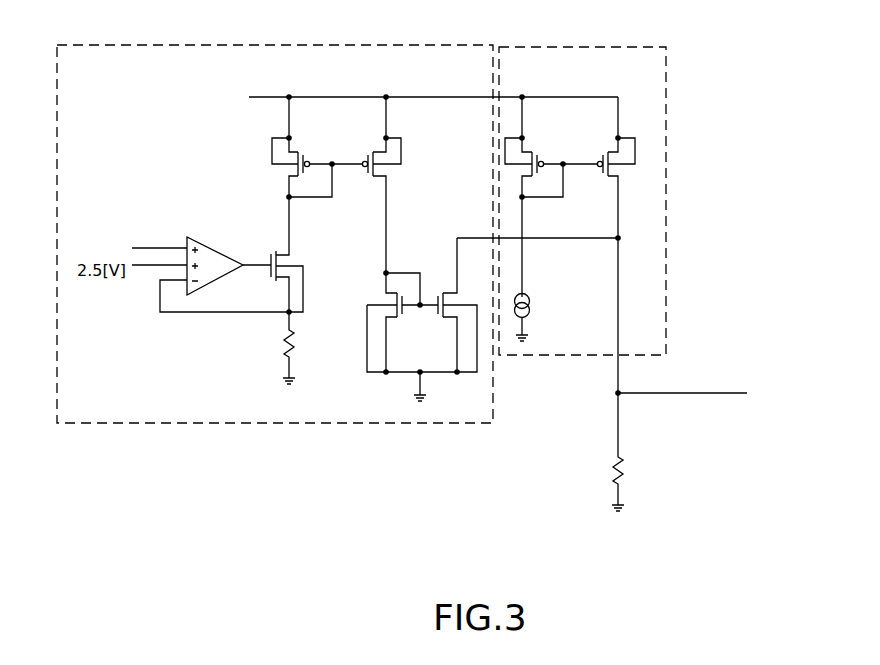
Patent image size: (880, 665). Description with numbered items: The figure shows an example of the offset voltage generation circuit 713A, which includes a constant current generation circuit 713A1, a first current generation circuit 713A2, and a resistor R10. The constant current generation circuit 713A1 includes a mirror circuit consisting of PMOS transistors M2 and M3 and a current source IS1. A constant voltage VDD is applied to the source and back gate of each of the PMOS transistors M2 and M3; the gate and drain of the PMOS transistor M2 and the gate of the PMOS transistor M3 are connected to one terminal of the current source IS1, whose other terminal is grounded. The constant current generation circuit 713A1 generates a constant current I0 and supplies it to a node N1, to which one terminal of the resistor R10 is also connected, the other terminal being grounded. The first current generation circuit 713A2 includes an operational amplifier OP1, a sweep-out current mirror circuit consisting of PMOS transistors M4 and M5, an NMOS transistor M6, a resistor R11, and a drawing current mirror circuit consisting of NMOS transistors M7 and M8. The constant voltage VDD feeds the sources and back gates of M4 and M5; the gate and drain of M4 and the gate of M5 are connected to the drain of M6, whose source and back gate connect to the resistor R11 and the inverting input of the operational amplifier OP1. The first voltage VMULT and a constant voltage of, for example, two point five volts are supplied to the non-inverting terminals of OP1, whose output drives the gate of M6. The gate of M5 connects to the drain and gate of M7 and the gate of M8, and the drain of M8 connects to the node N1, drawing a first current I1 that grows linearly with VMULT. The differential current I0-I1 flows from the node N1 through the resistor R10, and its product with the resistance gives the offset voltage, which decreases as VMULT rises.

The offset voltage generation circuit 713A is at (500, 581).
The constant current generation circuit 713A1 is at (587, 45).
The first current generation circuit 713A2 is at (302, 47).
The PMOS transistor M2 is at (532, 150).
The PMOS transistor M3 is at (604, 150).
The PMOS transistor M4 is at (300, 149).
The PMOS transistor M5 is at (372, 149).
The NMOS transistor M6 is at (294, 263).
The NMOS transistor M7 is at (398, 322).
The NMOS transistor M8 is at (442, 322).
The operational amplifier OP1 is at (214, 249).
The resistor R10 is at (626, 468).
The resistor R11 is at (297, 346).
The current source IS1 is at (531, 312).
The node N1 is at (622, 242).
The constant current I0 is at (631, 219).
The first current I1 is at (603, 250).
The differential current I0-I1 is at (629, 453).
The constant voltage VDD is at (412, 96).
The first voltage VMULT is at (97, 246).